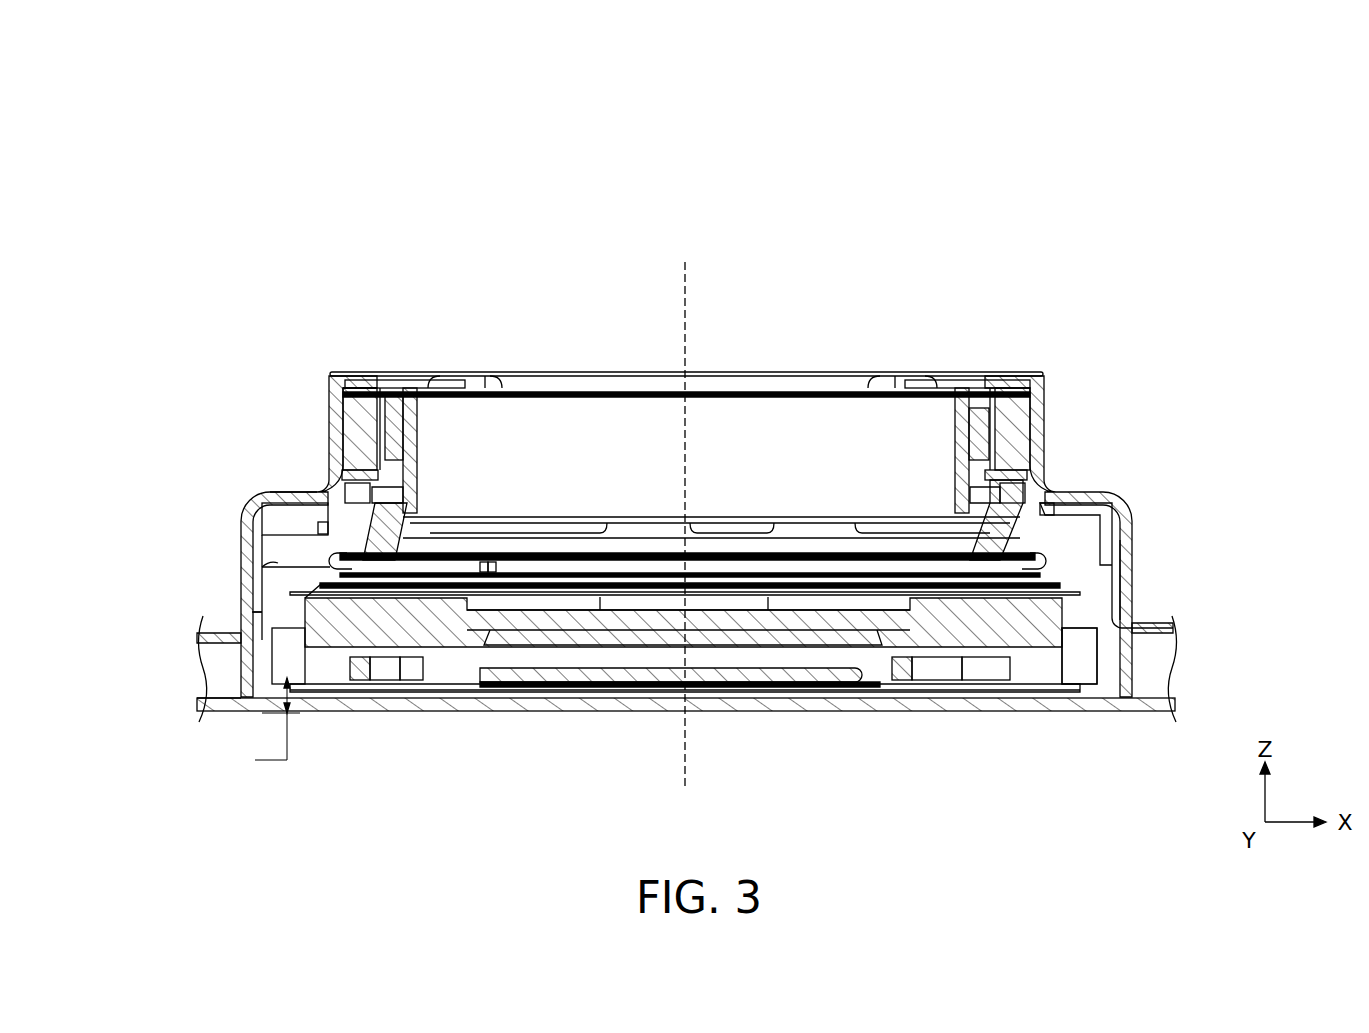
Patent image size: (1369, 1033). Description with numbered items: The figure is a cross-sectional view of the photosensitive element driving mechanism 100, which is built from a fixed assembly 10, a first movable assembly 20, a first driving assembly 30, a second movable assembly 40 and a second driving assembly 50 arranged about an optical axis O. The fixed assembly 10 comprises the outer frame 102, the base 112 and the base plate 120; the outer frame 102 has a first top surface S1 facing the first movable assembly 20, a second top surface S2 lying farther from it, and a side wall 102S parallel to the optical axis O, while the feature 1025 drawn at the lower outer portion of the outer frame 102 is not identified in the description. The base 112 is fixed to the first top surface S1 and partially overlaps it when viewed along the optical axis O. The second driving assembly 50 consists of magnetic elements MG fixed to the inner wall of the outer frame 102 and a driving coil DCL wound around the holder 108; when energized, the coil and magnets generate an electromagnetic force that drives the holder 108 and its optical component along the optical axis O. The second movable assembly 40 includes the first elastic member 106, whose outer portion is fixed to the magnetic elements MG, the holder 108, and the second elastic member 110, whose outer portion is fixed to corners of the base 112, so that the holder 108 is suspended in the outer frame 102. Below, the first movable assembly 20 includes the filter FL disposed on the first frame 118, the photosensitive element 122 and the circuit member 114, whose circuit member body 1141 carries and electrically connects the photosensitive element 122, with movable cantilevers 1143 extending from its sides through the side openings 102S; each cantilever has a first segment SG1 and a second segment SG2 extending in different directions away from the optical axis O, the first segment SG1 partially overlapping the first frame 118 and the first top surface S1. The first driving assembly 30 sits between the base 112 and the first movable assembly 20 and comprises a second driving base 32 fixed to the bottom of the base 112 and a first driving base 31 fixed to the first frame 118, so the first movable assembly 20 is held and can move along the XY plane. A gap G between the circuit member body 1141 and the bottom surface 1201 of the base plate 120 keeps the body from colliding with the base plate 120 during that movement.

The photosensitive element driving mechanism 100 is at (170, 256).
The outer frame 102 is at (340, 378).
The first elastic member 106 is at (1030, 380).
The holder 108 is at (518, 425).
The second elastic member 110 is at (338, 473).
The base 112 is at (270, 517).
The circuit member 114 is at (1040, 786).
The circuit member body 1141 is at (1057, 692).
The movable cantilever 1143 is at (1153, 692).
The first frame 118 is at (340, 623).
The base plate 120 is at (845, 706).
The bottom surface 1201 is at (240, 700).
The photosensitive element 122 is at (580, 688).
The housing flange / protrusion 1025 is at (252, 664).
The side wall 102S is at (1133, 567).
The first driving base 31 is at (1048, 575).
The second driving base 32 is at (1040, 503).
The first driving assembly 30 is at (1203, 470).
The fixed assembly 10 is at (1295, 148).
The first movable assembly 20 is at (1295, 385).
The second movable assembly 40 is at (1295, 268).
The second driving assembly 50 is at (1295, 60).
The magnetic element MG is at (353, 437).
The driving coil DCL is at (390, 398).
The first top surface S1 is at (298, 491).
The second top surface S2 is at (355, 394).
The first segment SG1 is at (275, 566).
The second segment SG2 is at (272, 609).
The gap G is at (277, 719).
The filter FL is at (470, 612).
The optical axis O is at (684, 514).